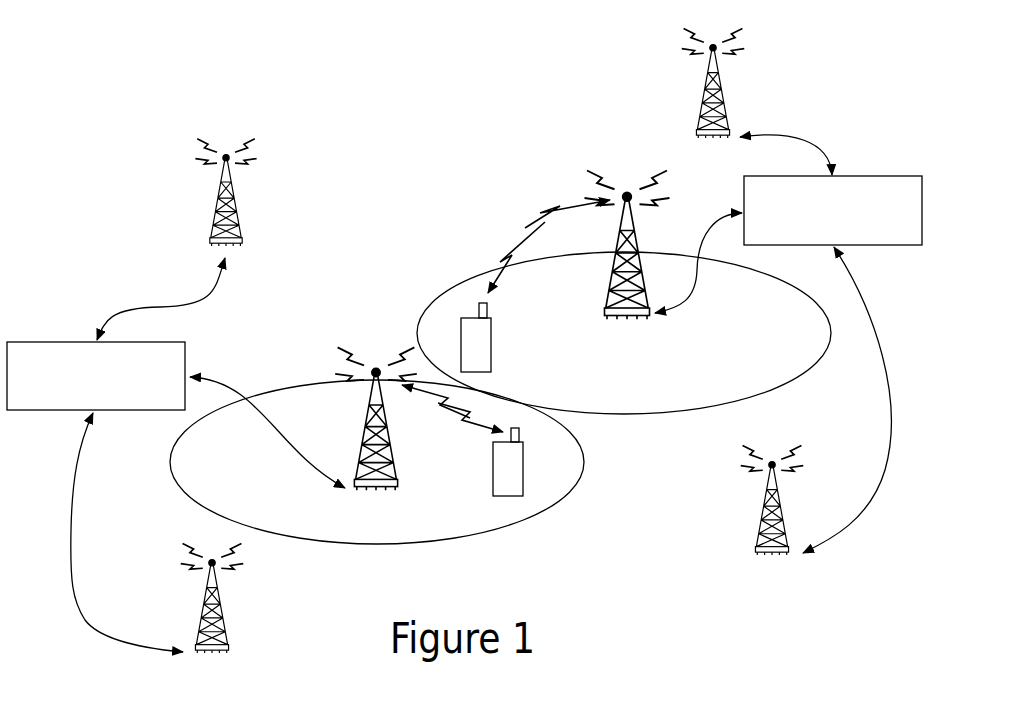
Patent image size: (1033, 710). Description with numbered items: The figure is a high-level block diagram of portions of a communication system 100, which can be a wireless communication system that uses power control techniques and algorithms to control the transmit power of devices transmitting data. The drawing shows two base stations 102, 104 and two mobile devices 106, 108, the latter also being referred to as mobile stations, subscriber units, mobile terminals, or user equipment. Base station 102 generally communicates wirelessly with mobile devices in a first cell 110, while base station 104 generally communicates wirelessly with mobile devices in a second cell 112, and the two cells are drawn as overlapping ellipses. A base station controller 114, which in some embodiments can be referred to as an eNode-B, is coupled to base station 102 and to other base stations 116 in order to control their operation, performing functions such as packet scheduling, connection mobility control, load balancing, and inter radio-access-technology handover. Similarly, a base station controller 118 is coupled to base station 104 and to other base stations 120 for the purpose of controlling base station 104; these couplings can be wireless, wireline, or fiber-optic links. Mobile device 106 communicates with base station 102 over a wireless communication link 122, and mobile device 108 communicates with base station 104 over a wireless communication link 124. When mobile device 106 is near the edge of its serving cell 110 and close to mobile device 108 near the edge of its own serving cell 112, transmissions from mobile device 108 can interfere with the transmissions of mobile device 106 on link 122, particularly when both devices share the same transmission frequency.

The communication system 100 is at (150, 78).
The base station 102 is at (360, 460).
The base station 104 is at (610, 297).
The mobile device 106 is at (492, 488).
The mobile device 108 is at (493, 350).
The cell 110 is at (583, 458).
The cell 112 is at (650, 413).
The base station controller 114 is at (32, 341).
The base stations 116 is at (212, 226).
The base station controller 118 is at (886, 176).
The base stations 120 is at (700, 116).
The wireless communication link 122 is at (455, 432).
The wireless communication link 124 is at (522, 222).